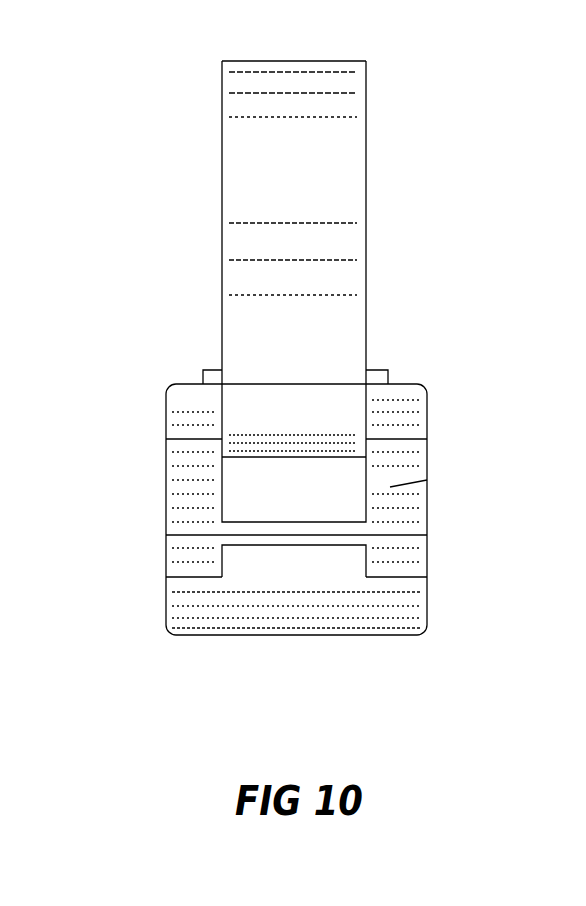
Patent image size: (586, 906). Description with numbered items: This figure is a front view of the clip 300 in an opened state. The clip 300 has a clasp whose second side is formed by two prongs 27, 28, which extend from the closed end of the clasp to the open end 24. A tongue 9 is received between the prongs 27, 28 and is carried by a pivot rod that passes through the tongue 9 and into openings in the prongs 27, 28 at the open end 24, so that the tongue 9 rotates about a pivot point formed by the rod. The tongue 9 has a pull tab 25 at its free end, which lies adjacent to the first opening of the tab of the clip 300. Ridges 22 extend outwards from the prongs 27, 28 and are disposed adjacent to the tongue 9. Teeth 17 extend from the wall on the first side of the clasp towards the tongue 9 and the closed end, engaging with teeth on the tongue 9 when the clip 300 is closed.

The clip 300 is at (193, 131).
The tongue 9 is at (308, 163).
The pull tab 25 is at (322, 61).
The ridges 22 is at (203, 370).
The prong 27 is at (220, 402).
The prong 28 is at (403, 413).
The teeth 17 is at (293, 560).
The open end 24 is at (358, 635).